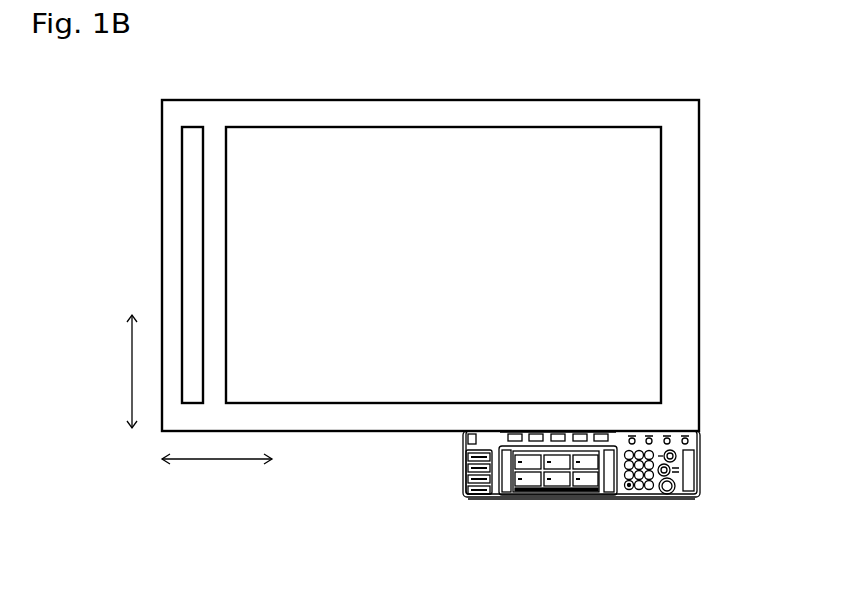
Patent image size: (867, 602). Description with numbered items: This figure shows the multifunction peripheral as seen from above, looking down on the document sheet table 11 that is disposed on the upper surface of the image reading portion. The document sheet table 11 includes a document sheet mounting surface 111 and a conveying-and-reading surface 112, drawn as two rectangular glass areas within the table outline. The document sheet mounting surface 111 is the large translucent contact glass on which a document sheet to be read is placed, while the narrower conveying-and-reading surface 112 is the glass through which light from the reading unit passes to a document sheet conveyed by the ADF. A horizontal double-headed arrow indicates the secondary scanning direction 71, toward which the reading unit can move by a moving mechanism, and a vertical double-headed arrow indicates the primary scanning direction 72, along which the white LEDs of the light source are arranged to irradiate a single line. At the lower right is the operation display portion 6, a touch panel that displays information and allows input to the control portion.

The document sheet table 11 is at (244, 100).
The document sheet mounting surface 111 is at (640, 127).
The conveying-and-reading surface 112 is at (193, 127).
The secondary scanning direction 71 is at (218, 459).
The primary scanning direction 72 is at (132, 365).
The operation display portion 6 is at (702, 456).